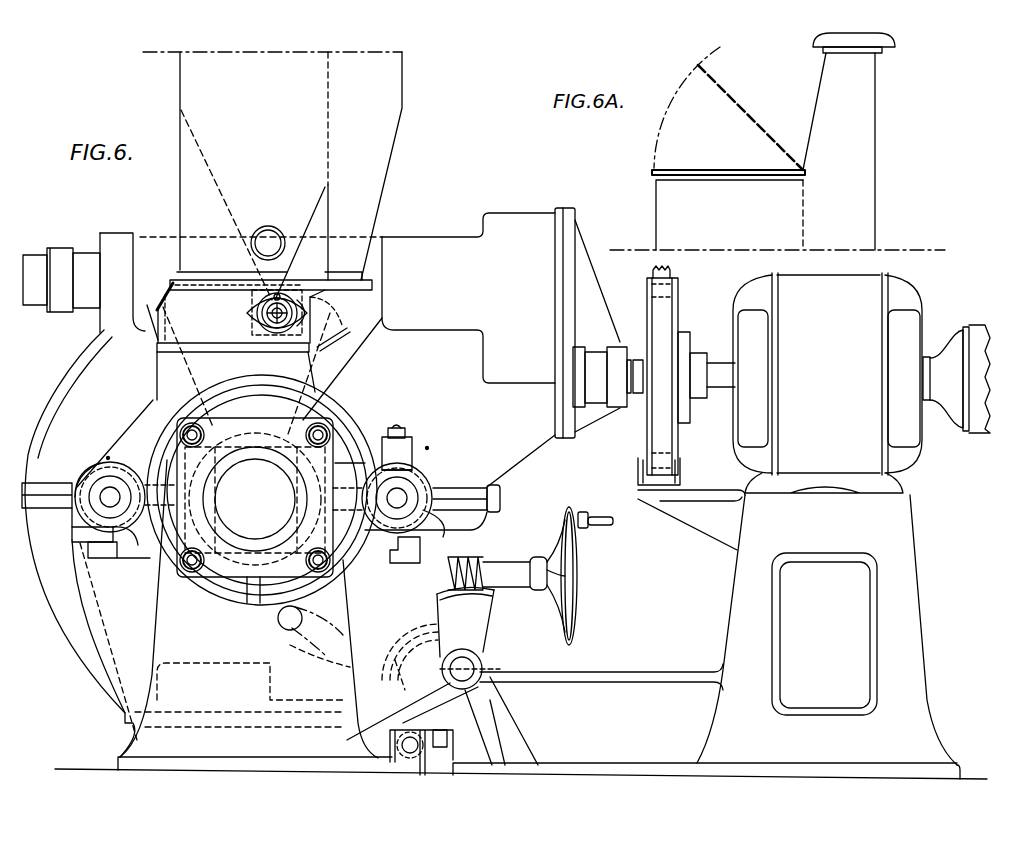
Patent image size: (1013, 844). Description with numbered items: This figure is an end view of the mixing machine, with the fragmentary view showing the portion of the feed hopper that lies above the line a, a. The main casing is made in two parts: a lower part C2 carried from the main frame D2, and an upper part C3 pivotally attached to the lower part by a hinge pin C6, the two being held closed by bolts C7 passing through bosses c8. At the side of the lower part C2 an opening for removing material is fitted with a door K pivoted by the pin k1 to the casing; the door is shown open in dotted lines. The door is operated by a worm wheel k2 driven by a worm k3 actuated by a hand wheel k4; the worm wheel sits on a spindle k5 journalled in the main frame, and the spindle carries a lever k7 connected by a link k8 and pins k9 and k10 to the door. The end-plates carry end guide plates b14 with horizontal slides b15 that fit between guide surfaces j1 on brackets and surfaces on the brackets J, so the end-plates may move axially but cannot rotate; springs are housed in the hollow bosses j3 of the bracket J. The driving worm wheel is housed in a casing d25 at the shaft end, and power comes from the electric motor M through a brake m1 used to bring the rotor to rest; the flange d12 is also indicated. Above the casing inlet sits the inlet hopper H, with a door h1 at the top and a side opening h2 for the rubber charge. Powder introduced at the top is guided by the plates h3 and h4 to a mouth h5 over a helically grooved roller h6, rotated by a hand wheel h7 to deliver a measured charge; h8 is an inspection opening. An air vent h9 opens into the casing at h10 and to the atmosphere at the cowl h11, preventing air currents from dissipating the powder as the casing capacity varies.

In FIG. 6, the line a a is at (279, 59).
In FIG. 6A, the line a a is at (777, 241).
In FIG. 6, the inlet hopper H is at (193, 90).
In FIG. 6A, the inlet hopper H is at (660, 197).
In FIG. 6A, the door h1 is at (748, 118).
In FIG. 6, the opening h2 is at (172, 284).
In FIG. 6, the plate h3 is at (206, 156).
In FIG. 6, the plate h4 is at (321, 198).
In FIG. 6, the mouth h5 is at (283, 297).
In FIG. 6, the helically grooved roller h6 is at (305, 317).
In FIG. 6, the hand wheel h7 is at (264, 312).
In FIG. 6, the inspection or observation opening h8 is at (270, 232).
In FIG. 6, the air vent h9 is at (378, 156).
In FIG. 6A, the air vent h9 is at (866, 174).
In FIG. 6, the vent opening into casing h10 is at (290, 347).
In FIG. 6A, the cowl h11 is at (818, 46).
In FIG. 6, the casing d25 is at (422, 242).
In FIG. 6, the flange d12 is at (238, 562).
In FIG. 6, the main casing part C2 is at (110, 645).
In FIG. 6, the main casing part C3 is at (157, 398).
In FIG. 6, the hinge pin C6 is at (90, 488).
In FIG. 6, the bolt C7 is at (398, 430).
In FIG. 6, the boss c8 is at (414, 470).
In FIG. 6, the end guide plate b14 is at (120, 430).
In FIG. 6, the horizontal slide b15 is at (107, 548).
In FIG. 6, the bracket J is at (70, 518).
In FIG. 6, the guide surface j1 is at (92, 557).
In FIG. 6, the hollow boss j3 is at (110, 478).
In FIG. 6, the door K is at (335, 634).
In FIG. 6, the pin k1 is at (279, 619).
In FIG. 6, the worm wheel k2 is at (480, 615).
In FIG. 6, the worm k3 is at (477, 565).
In FIG. 6, the hand wheel k4 is at (578, 574).
In FIG. 6, the spindle k5 is at (483, 660).
In FIG. 6, the lever k7 is at (443, 708).
In FIG. 6, the link k8 is at (640, 726).
In FIG. 6, the pin k9 is at (425, 755).
In FIG. 6, the pin k10 is at (400, 660).
In FIG. 6, the main frame D2 is at (600, 675).
In FIG. 6, the brake m1 is at (667, 308).
In FIG. 6, the electric motor M is at (843, 526).